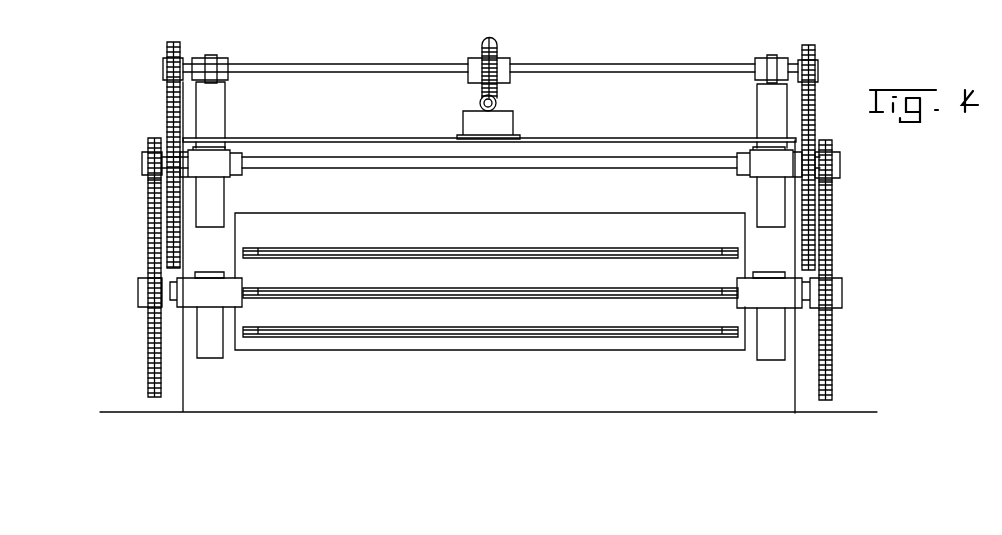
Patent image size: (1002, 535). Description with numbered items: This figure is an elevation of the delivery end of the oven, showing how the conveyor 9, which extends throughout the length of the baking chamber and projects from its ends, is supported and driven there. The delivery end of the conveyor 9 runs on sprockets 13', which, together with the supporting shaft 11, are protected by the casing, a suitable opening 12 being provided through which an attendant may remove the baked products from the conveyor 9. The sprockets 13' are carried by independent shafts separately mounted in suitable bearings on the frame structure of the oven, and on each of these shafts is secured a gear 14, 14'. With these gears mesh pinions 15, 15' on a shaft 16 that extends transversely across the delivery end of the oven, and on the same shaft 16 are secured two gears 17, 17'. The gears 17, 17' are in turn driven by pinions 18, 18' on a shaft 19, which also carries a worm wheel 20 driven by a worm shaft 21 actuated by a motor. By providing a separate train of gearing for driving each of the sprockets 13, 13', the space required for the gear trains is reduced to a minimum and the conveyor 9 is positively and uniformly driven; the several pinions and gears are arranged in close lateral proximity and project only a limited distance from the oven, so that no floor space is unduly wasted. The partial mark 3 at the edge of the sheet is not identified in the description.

The partial numeral (cut off) 3 is at (248, 4).
The conveyor 9 is at (478, 258).
The supporting shaft 11 is at (172, 298).
The opening 12 is at (332, 226).
The sprockets 13 is at (490, 243).
The sprockets 13' is at (490, 281).
The gear 14 is at (136, 288).
The gear 14' is at (802, 291).
The pinion 15 is at (136, 159).
The pinion 15' is at (842, 156).
The shaft 16 is at (556, 166).
The gear 17 is at (155, 155).
The gear 17' is at (829, 157).
The pinion 18 is at (157, 59).
The pinion 18' is at (826, 61).
The shaft 19 is at (604, 72).
The worm wheel 20 is at (480, 45).
The worm shaft 21 is at (497, 103).